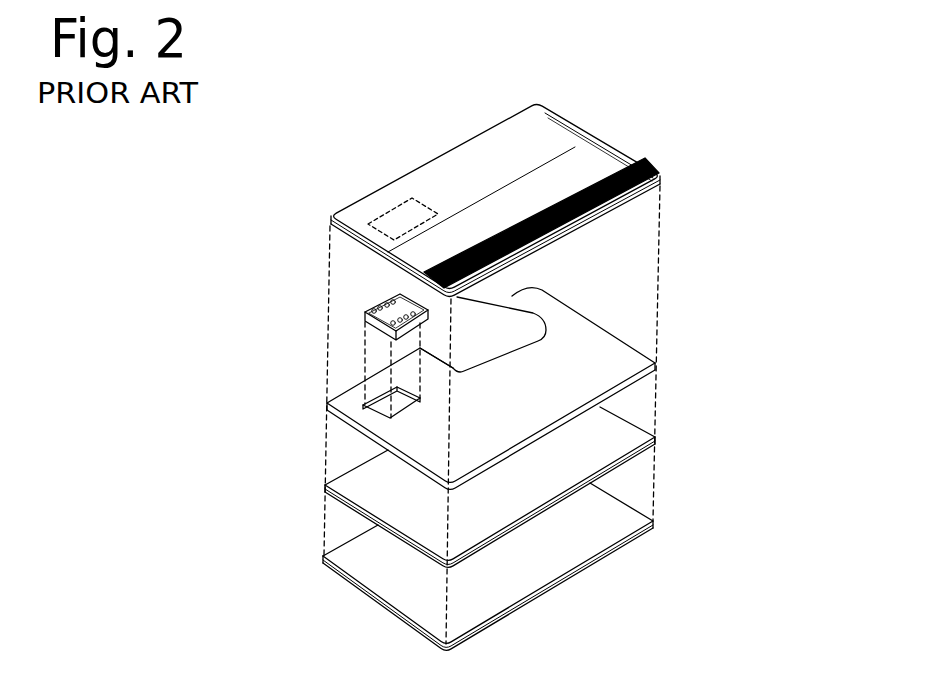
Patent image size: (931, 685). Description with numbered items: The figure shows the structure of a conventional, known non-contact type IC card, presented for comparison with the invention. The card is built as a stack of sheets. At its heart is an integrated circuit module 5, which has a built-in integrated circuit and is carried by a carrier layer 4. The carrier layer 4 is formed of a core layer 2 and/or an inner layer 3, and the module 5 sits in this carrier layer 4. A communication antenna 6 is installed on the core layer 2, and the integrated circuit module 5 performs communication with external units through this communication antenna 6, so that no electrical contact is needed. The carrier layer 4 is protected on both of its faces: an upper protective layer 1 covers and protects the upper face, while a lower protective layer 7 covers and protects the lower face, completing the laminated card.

The upper protective layer 1 is at (632, 147).
The core layer 2 is at (598, 322).
The inner layer 3 is at (638, 427).
The carrier layer 4 is at (578, 407).
The integrated circuit module 5 is at (373, 303).
The communication antenna 6 is at (535, 306).
The lower protective layer 7 is at (628, 542).